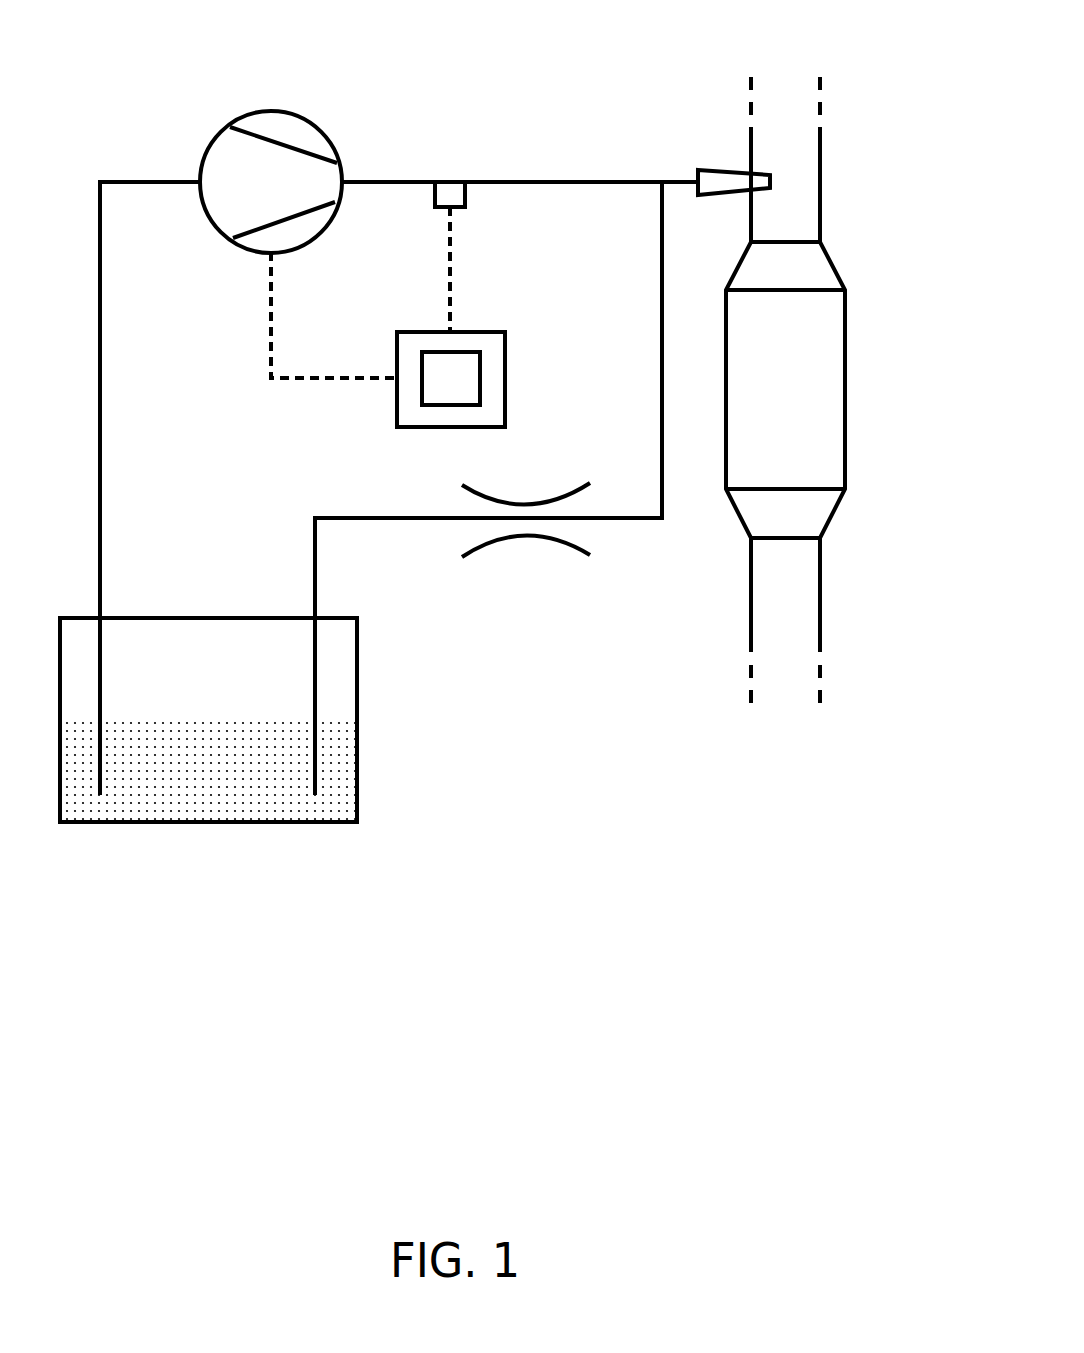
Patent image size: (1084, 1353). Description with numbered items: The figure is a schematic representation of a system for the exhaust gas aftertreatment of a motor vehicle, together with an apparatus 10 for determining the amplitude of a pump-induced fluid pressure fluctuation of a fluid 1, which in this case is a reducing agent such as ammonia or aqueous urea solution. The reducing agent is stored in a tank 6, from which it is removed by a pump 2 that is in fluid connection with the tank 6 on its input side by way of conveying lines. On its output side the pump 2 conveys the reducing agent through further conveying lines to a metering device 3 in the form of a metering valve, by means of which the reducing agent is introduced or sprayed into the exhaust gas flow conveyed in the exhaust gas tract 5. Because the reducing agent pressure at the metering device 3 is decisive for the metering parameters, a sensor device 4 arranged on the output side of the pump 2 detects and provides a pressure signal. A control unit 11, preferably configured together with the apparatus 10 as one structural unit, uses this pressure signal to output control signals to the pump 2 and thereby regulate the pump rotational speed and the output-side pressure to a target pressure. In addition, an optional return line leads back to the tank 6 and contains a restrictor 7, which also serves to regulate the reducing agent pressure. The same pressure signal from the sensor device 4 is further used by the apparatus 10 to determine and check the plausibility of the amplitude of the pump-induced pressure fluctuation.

The fluid 1 is at (342, 767).
The pump 2 is at (287, 130).
The metering device 3 is at (727, 178).
The sensor device 4 is at (455, 178).
The exhaust gas tract 5 is at (884, 287).
The tank 6 is at (172, 642).
The restrictor 7 is at (514, 570).
The apparatus 10 is at (492, 348).
The control unit 11 is at (465, 384).